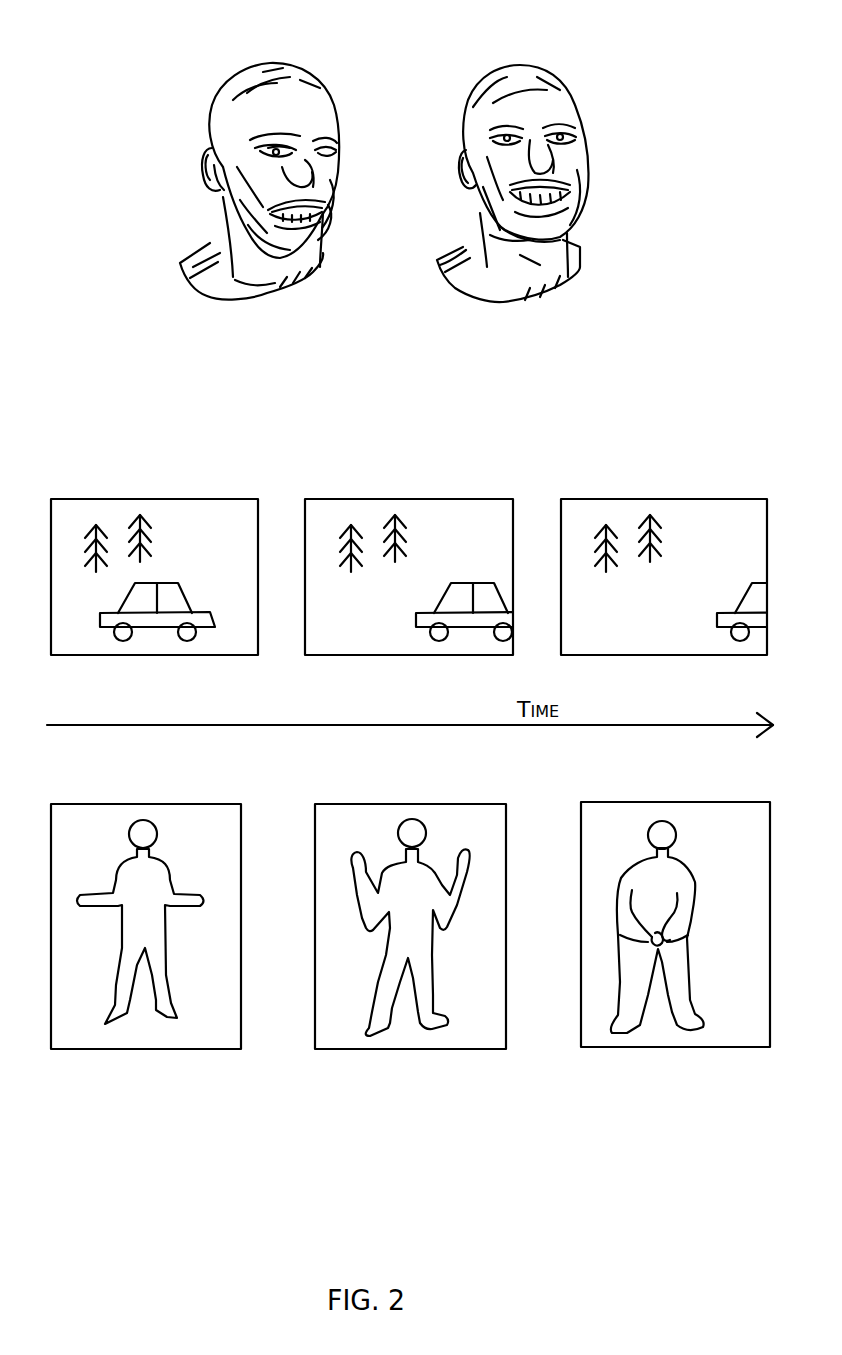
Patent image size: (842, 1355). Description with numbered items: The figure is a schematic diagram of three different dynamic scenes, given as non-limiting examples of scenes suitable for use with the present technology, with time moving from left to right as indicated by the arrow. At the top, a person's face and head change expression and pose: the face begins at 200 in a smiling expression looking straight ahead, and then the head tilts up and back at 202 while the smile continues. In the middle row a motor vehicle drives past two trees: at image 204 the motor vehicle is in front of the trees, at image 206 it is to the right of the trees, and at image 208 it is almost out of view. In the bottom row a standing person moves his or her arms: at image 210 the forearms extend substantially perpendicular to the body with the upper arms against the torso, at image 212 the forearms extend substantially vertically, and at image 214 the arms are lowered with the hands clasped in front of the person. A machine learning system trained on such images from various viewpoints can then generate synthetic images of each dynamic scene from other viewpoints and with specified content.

The face in smiling expression looking straight ahead 200 is at (242, 35).
The head tilted up and back 202 is at (532, 35).
The image with motor vehicle in front of the trees 204 is at (208, 533).
The image with motor vehicle to the right of the trees 206 is at (463, 533).
The image with motor vehicle almost out of view 208 is at (718, 533).
The image of standing person with forearms perpendicular to body 210 is at (192, 838).
The image of standing person with forearms vertical 212 is at (457, 838).
The image of standing person with hands clasped 214 is at (720, 836).